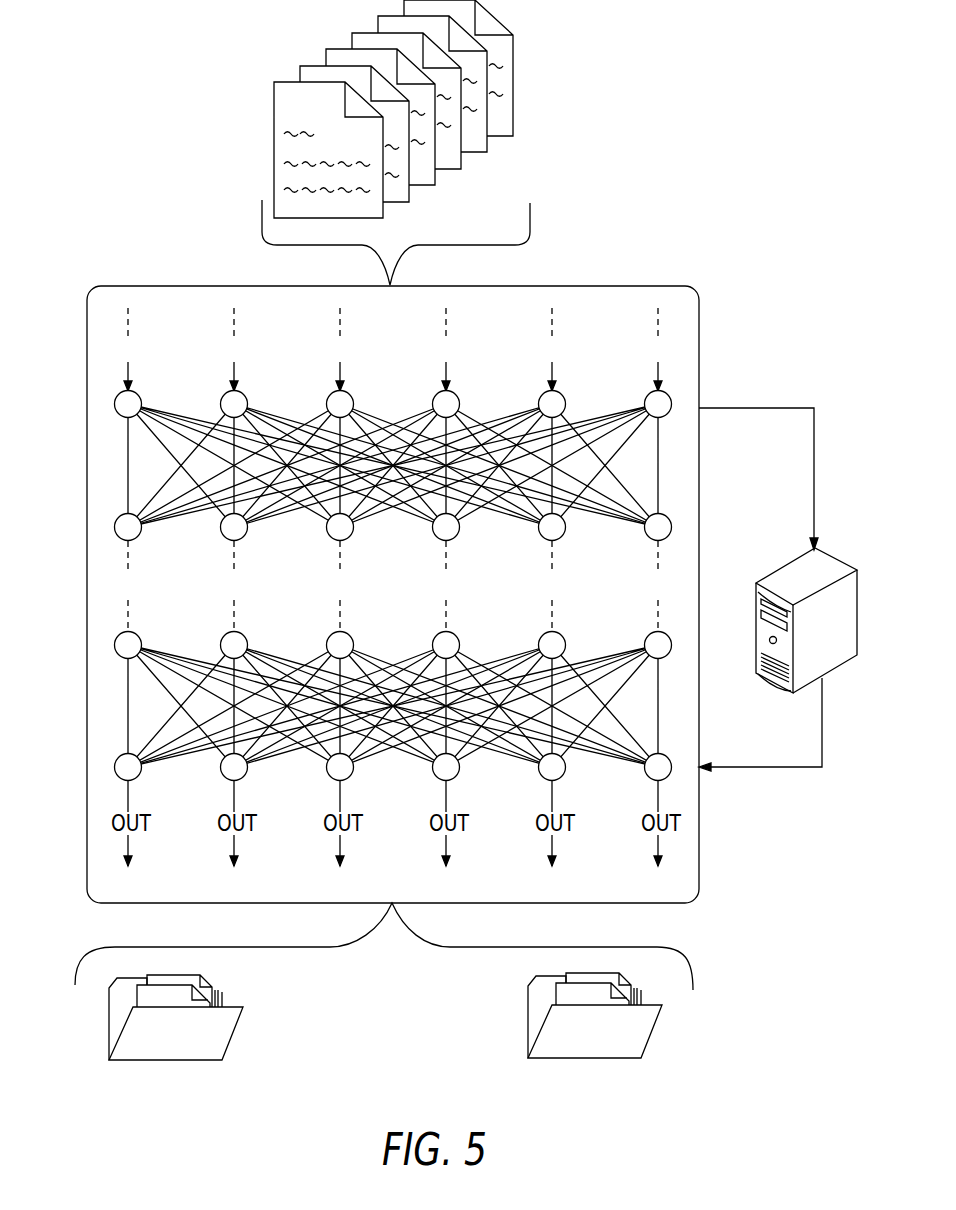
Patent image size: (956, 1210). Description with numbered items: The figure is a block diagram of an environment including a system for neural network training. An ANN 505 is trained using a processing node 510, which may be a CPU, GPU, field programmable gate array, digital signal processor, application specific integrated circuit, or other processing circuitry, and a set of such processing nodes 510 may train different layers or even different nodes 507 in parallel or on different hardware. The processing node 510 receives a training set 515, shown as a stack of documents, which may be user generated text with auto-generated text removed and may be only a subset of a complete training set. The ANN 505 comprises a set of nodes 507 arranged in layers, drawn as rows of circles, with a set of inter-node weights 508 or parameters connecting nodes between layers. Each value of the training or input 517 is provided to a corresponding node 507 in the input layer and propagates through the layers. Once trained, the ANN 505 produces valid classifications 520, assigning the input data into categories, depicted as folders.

The ANN 505 is at (153, 287).
The nodes 507 is at (668, 396).
The inter-node weights 508 is at (125, 460).
The processing node 510 is at (806, 560).
The training set 515 is at (277, 83).
The input 517 is at (658, 322).
The classifications 520 is at (150, 1061).